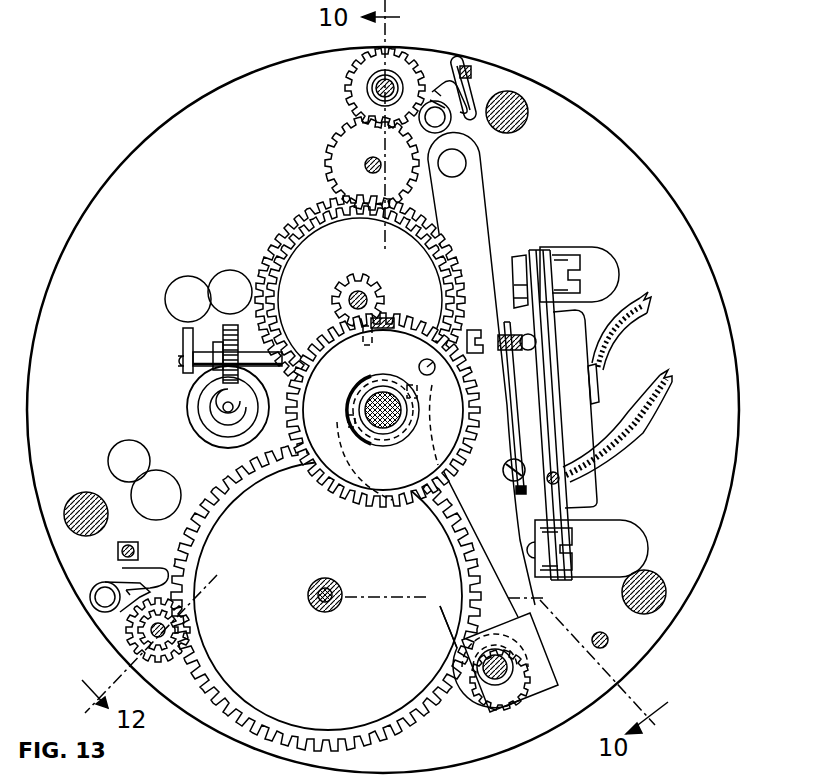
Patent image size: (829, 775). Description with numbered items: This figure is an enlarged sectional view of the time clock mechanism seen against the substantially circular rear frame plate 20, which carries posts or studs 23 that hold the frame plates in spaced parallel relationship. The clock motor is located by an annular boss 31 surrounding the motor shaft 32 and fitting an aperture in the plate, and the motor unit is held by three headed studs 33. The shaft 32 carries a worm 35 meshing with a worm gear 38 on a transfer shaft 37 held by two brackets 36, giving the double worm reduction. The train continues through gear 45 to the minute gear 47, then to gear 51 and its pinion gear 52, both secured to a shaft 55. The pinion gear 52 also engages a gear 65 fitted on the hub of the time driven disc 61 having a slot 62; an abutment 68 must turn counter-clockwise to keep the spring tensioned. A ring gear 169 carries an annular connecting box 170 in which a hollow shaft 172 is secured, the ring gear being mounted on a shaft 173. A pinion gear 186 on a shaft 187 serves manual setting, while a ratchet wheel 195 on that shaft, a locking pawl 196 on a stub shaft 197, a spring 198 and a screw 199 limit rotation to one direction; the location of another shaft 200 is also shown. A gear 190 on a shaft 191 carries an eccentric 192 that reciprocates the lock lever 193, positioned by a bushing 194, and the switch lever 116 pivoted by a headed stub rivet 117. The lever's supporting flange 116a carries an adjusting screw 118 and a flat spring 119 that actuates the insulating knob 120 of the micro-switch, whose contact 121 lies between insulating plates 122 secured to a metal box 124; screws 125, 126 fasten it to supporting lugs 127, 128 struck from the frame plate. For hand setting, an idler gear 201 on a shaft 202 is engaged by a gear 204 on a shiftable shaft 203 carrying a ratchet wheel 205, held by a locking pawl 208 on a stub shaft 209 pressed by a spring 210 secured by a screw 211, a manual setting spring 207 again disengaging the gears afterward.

The rear frame plate 20 is at (657, 227).
The posts or studs 23 is at (525, 122).
The annular boss 31 is at (205, 398).
The motor shaft 32 is at (223, 407).
The headed studs 33 is at (230, 285).
The worm 35 is at (223, 423).
The brackets 36 is at (190, 337).
The transfer shaft 37 is at (208, 353).
The worm gear 38 is at (225, 328).
The gear 45 is at (277, 238).
The minute gear 47 is at (480, 390).
The gear 51 is at (323, 235).
The pinion gear 52 is at (375, 302).
The shaft 55 is at (368, 295).
The time driven disc 61 is at (398, 473).
The slot 62 is at (423, 363).
The gear 65 is at (305, 460).
The abutment 68 is at (394, 320).
The lever 116 is at (470, 240).
The supporting flange 116a is at (510, 443).
The headed stub rivet 117 is at (465, 167).
The adjusting screw 118 is at (478, 330).
The flat spring 119 is at (507, 322).
The knob 120 is at (532, 338).
The contact 121 is at (556, 468).
The insulating plates 122 is at (548, 407).
The metal box 124 is at (583, 502).
The screw 125 is at (575, 532).
The screw 126 is at (556, 263).
The supporting lug 127 is at (545, 600).
The supporting lug 128 is at (514, 257).
The ring gear 169 is at (257, 718).
The annular connecting box 170 is at (242, 685).
The hollow shaft 172 is at (315, 607).
The shaft 173 is at (335, 607).
The pinion gear 186 is at (143, 632).
The shaft 187 is at (157, 633).
The gear 190 is at (463, 680).
The shaft 191 is at (493, 680).
The eccentric 192 is at (512, 672).
The lock lever 193 is at (353, 503).
The bushing 194 is at (500, 690).
The ratchet wheel 195 is at (172, 670).
The locking pawl 196 is at (97, 585).
The stub shaft 197 is at (110, 598).
The spring 198 is at (128, 572).
The screw 199 is at (120, 552).
The shaft 200 is at (607, 638).
The idler gear 201 is at (348, 147).
The shaft 202 is at (363, 165).
The shiftable shaft 203 is at (390, 85).
The gear 204 is at (350, 100).
The ratchet wheel 205 is at (353, 72).
The manual setting spring 207 is at (448, 86).
The locking pawl 208 is at (470, 68).
The stub shaft 209 is at (442, 120).
The spring 210 is at (472, 95).
The screw 211 is at (470, 85).